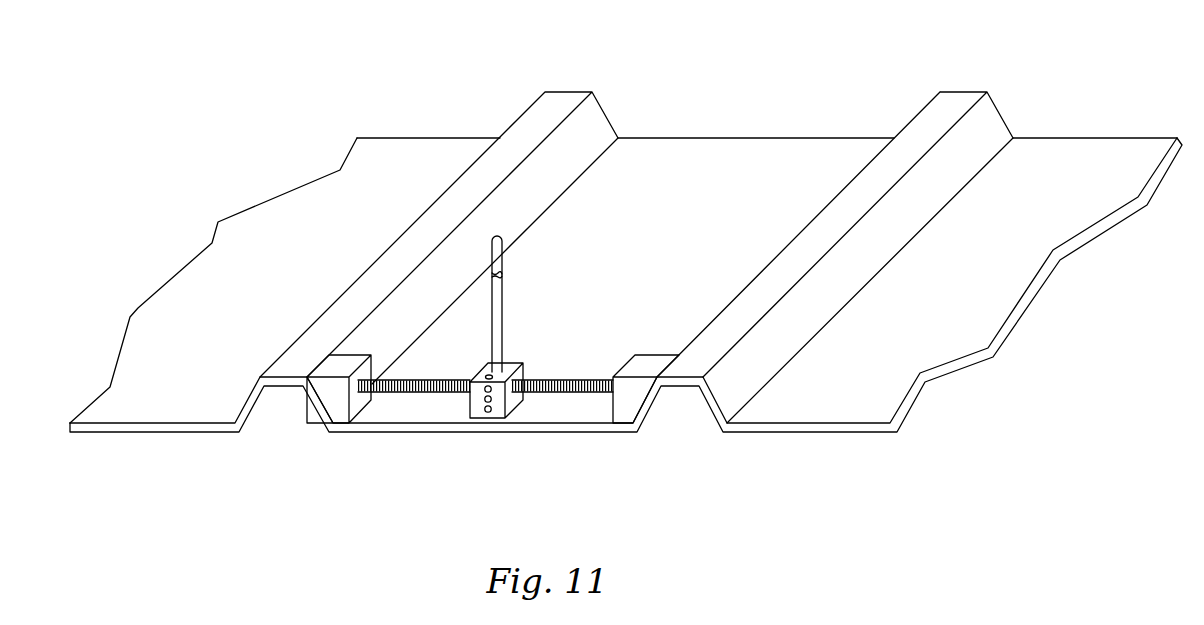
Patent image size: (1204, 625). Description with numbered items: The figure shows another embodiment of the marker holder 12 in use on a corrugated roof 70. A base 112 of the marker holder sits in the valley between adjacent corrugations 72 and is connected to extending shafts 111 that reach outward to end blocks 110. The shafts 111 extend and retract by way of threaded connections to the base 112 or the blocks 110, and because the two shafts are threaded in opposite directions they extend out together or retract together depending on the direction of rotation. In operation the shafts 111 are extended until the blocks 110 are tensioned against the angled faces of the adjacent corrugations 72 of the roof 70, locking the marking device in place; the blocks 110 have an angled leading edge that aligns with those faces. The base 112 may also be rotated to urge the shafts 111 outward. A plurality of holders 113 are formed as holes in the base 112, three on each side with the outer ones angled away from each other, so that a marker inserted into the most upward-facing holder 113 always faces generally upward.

The holder 12 is at (488, 261).
The roof 70 is at (163, 303).
The corrugations 72 is at (298, 357).
The end blocks 110 is at (340, 400).
The extending shafts 111 is at (420, 397).
The base 112 is at (478, 412).
The holders 113 is at (508, 356).